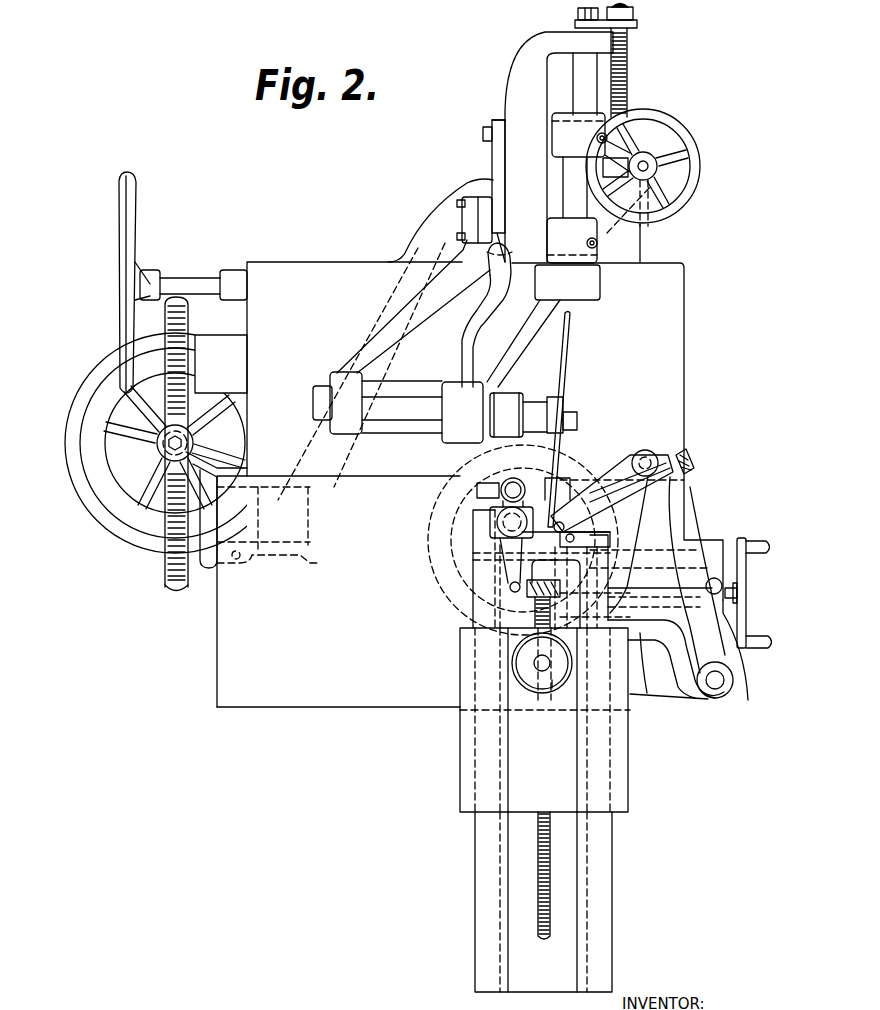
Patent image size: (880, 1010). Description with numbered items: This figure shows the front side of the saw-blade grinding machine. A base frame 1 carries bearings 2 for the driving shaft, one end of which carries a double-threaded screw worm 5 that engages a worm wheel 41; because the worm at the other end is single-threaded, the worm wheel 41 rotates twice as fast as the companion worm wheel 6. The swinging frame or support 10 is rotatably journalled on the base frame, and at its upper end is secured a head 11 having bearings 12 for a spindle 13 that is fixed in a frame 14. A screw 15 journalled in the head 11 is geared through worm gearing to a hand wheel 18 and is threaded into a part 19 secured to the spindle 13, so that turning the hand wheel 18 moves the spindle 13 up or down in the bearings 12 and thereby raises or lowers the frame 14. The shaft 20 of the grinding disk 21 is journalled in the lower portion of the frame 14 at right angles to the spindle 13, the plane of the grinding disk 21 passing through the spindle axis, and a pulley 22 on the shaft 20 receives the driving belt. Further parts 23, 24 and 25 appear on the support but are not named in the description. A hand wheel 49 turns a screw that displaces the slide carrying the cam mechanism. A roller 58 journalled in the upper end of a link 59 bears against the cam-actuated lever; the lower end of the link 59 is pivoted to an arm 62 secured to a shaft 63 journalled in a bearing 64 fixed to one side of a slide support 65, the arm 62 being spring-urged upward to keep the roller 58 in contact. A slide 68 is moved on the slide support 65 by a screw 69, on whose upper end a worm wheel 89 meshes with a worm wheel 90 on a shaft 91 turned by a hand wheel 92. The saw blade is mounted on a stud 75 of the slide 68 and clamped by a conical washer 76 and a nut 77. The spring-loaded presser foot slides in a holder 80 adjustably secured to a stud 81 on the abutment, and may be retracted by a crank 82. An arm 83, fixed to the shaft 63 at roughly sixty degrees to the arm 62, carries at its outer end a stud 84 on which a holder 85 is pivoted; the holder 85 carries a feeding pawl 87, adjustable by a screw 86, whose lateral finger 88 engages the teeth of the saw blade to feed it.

The base frame 1 is at (228, 667).
The bearings 2 is at (197, 470).
The screw worm 5 is at (100, 372).
The worm wheel 6 is at (180, 590).
The frame or support 10 is at (435, 207).
The head 11 is at (612, 248).
The bearings 12 is at (583, 127).
The shaft or spindle 13 is at (577, 80).
The frame 14 is at (390, 325).
The screw 15 is at (627, 63).
The hand wheel 18 is at (683, 140).
The part 19 is at (633, 24).
The shaft 20 is at (387, 410).
The grinding disk 21 is at (569, 357).
The pulley 22 is at (508, 400).
The plate 23 is at (497, 163).
The bracket 24 is at (477, 218).
The bolt 25 is at (493, 197).
The worm wheel 41 is at (176, 300).
The hand wheel 49 is at (127, 210).
The roller 58 is at (553, 485).
The link 59 is at (430, 525).
The arm 62 is at (645, 695).
The shaft 63 is at (713, 690).
The bearing 64 is at (648, 632).
The slide support 65 is at (475, 876).
The slide 68 is at (460, 748).
The screw 69 is at (540, 907).
The stud 75 is at (540, 663).
The conical washer 76 is at (513, 663).
The nut 77 is at (552, 690).
The holder 80 is at (490, 512).
The stud 81 is at (500, 482).
The crank 82 is at (505, 552).
The arm 83 is at (690, 574).
The stud 84 is at (655, 455).
The holder 85 is at (618, 460).
The screw 86 is at (690, 455).
The feeding pawl 87 is at (668, 518).
The lateral finger 88 is at (562, 523).
The worm wheel 89 is at (527, 590).
The worm wheel 90 is at (510, 583).
The shaft 91 is at (747, 703).
The hand wheel 92 is at (740, 537).